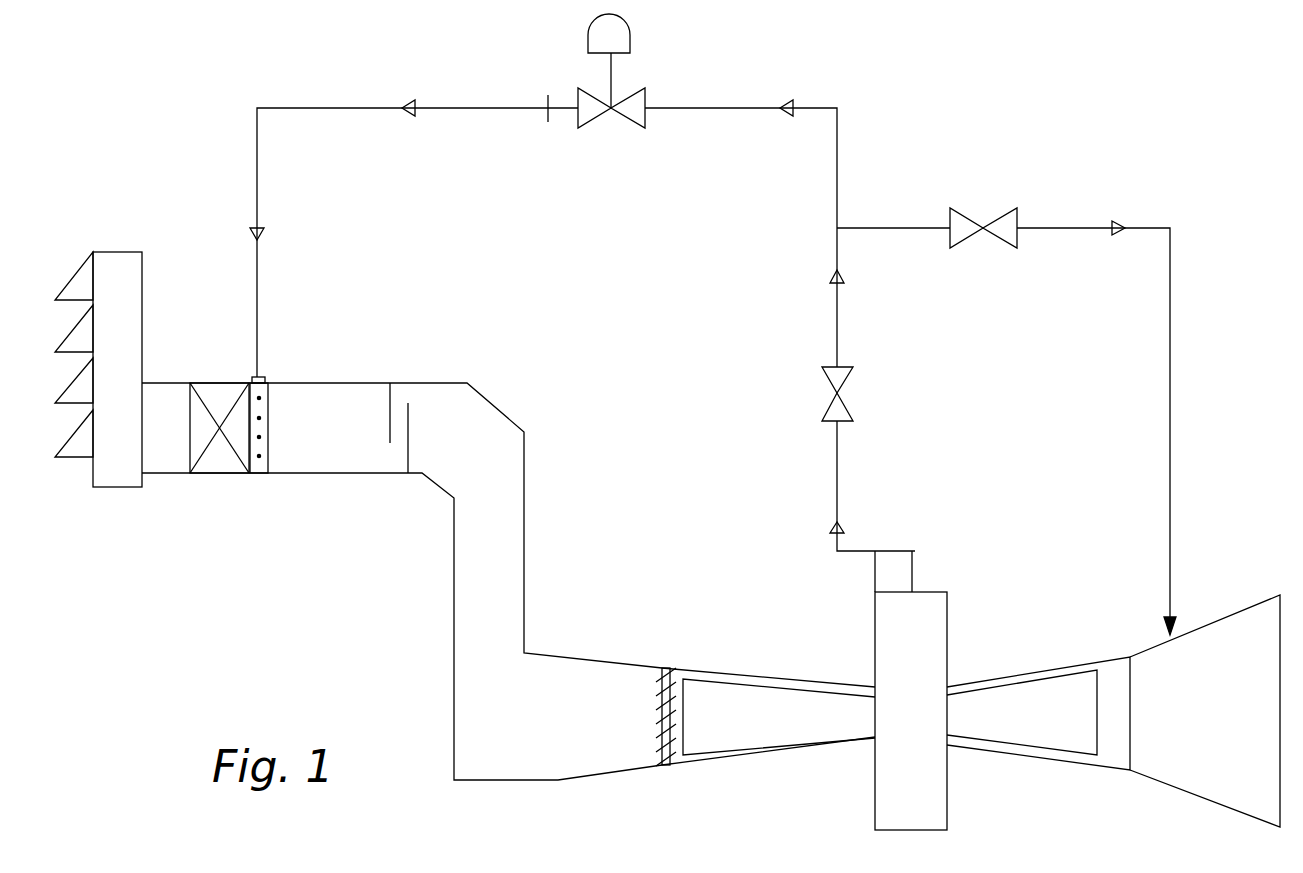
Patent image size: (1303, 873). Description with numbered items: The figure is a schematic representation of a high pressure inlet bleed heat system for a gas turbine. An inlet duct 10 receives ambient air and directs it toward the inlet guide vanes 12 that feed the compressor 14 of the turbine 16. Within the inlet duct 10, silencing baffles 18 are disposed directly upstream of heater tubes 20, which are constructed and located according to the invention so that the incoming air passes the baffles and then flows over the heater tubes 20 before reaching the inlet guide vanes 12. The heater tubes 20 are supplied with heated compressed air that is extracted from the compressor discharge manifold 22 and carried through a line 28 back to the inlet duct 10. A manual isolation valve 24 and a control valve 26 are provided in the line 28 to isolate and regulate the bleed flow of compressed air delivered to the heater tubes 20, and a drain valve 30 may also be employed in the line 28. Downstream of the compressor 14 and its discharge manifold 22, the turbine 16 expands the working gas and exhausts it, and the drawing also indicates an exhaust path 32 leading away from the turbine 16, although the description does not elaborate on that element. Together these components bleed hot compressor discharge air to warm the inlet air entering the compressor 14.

The inlet duct 10 is at (204, 318).
The inlet guide vanes 12 is at (655, 688).
The compressor 14 is at (747, 697).
The turbine 16 is at (1003, 683).
The silencing baffles 18 is at (222, 465).
The heater tubes 20 is at (268, 442).
The compressor discharge manifold 22 is at (875, 635).
The manual isolation valve 24 is at (827, 378).
The control valve 26 is at (590, 123).
The line 28 is at (728, 108).
The drain valve 30 is at (962, 240).
The exhaust line 32 is at (1170, 412).